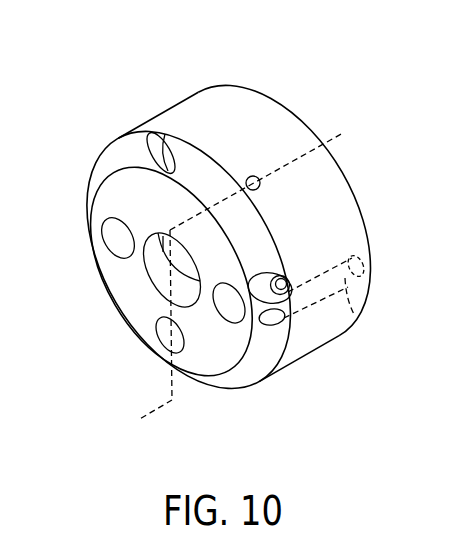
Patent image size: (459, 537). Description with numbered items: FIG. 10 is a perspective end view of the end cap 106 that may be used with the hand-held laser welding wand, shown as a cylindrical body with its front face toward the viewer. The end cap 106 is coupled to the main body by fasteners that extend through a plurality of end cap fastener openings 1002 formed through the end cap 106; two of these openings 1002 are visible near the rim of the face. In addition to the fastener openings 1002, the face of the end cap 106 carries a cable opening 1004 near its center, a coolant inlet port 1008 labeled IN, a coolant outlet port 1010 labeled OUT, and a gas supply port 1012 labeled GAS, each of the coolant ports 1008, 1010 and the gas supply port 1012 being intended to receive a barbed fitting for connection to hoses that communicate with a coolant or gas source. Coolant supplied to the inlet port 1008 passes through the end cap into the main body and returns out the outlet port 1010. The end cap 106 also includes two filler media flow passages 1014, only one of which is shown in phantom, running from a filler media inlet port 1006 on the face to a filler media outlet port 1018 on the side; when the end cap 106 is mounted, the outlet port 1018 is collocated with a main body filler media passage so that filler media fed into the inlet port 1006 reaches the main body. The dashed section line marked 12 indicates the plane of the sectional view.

The end cap 106 is at (98, 90).
The end cap fastener openings 1002 is at (165, 135).
The cable opening 1004 is at (163, 252).
The filler media supply ports 1006 is at (272, 318).
The coolant inlet port 1008 is at (112, 235).
The coolant outlet port 1010 is at (231, 300).
The gas supply port 1012 is at (163, 333).
The filler media flow passages 1014 is at (357, 318).
The filler media outlet port 1018 is at (367, 257).
The section line 12- 12 is at (343, 133).